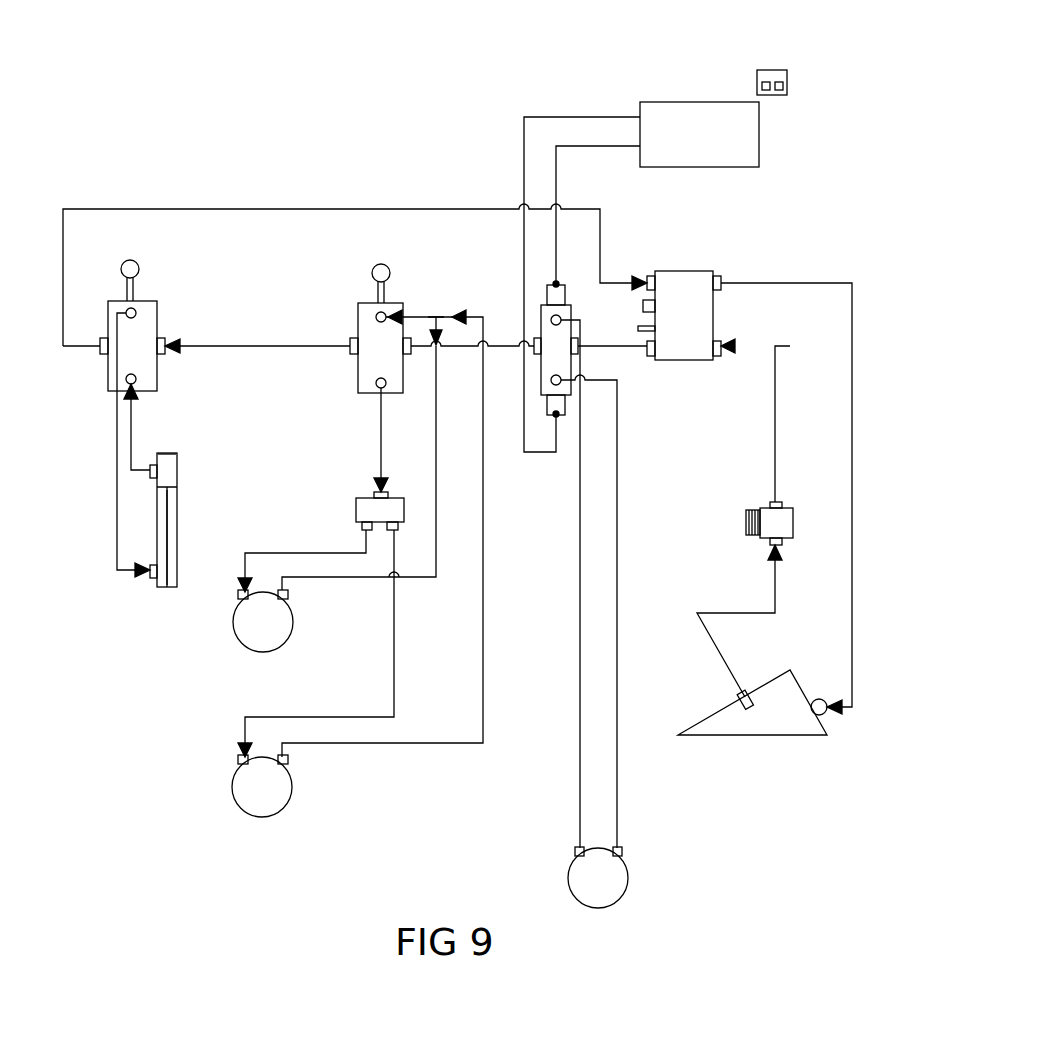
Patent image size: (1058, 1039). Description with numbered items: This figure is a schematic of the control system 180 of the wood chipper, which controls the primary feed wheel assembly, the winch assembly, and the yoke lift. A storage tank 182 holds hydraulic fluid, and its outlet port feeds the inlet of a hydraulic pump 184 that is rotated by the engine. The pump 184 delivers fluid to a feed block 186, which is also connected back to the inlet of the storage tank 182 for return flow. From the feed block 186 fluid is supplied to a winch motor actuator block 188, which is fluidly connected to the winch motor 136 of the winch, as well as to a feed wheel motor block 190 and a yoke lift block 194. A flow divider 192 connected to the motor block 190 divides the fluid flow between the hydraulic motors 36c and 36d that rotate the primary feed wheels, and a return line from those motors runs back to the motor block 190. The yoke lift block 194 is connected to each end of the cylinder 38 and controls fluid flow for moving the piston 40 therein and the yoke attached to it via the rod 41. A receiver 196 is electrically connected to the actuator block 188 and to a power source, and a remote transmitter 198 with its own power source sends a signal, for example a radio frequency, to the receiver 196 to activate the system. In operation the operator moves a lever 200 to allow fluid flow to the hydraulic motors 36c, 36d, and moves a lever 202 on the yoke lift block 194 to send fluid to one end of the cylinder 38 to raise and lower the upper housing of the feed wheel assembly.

The control system 180 is at (285, 115).
The storage tank 182 is at (763, 725).
The hydraulic pump 184 is at (793, 518).
The feed block 186 is at (700, 271).
The winch motor actuator block 188 is at (571, 312).
The feed wheel motor block 190 is at (358, 318).
The flow divider 192 is at (356, 510).
The yoke lift block 194 is at (157, 322).
The receiver 196 is at (662, 102).
The transmitter 198 is at (787, 85).
The lever 200 is at (375, 268).
The lever 202 is at (139, 264).
The hydraulic motor 36c is at (279, 790).
The hydraulic motor 36d is at (248, 630).
The winch motor 136 is at (613, 882).
The cylinder 38 is at (177, 532).
The piston 40 is at (168, 480).
The rod 41 is at (168, 505).